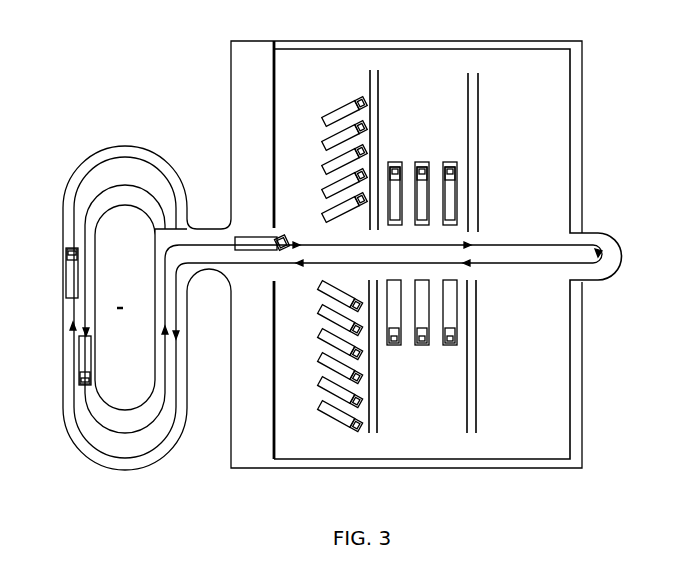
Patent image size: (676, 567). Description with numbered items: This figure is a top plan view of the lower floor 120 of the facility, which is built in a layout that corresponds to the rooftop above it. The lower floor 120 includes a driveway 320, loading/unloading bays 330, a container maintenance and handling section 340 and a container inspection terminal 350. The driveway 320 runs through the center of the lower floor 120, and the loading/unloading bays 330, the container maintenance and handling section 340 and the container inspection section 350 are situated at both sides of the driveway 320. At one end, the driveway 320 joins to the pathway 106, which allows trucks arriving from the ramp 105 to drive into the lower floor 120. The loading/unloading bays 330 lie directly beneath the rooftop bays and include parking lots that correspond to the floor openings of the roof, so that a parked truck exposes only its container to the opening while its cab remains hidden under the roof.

The ramp 105 is at (127, 145).
The pathway 106 is at (213, 228).
The lower floor 120 is at (598, 96).
The driveway 320 is at (305, 261).
The loading/unloading bays 330 is at (439, 226).
The container maintenance and handling section 340 is at (537, 161).
The container inspection terminal 350 is at (305, 101).